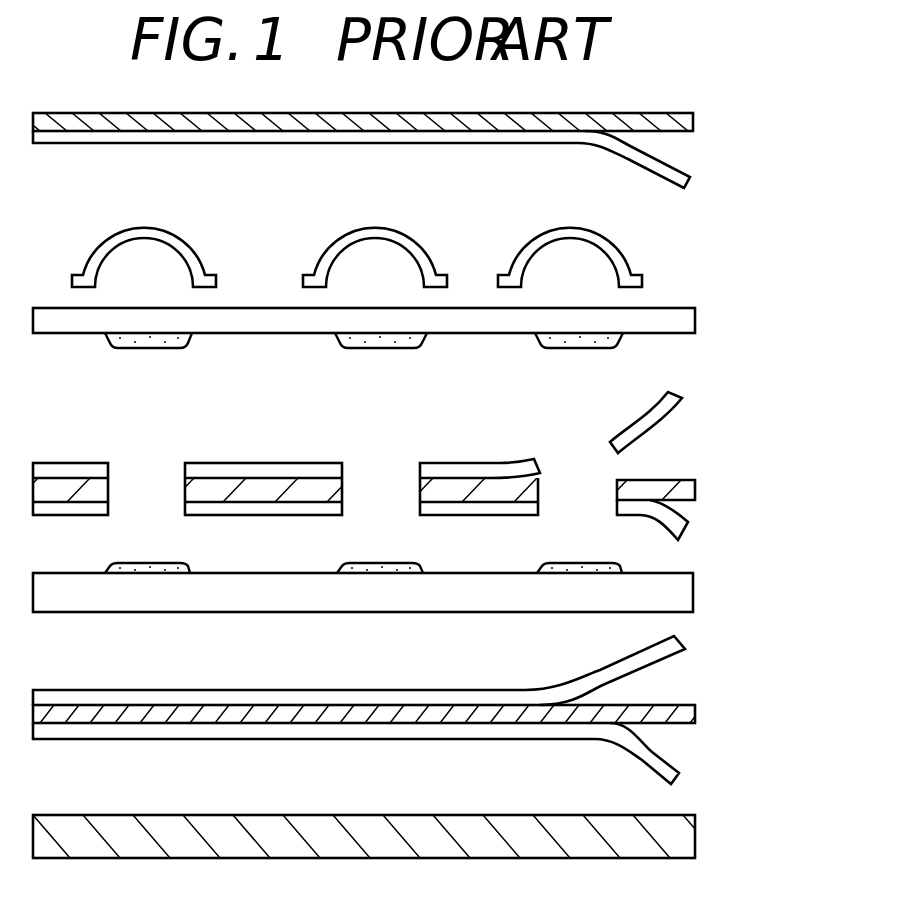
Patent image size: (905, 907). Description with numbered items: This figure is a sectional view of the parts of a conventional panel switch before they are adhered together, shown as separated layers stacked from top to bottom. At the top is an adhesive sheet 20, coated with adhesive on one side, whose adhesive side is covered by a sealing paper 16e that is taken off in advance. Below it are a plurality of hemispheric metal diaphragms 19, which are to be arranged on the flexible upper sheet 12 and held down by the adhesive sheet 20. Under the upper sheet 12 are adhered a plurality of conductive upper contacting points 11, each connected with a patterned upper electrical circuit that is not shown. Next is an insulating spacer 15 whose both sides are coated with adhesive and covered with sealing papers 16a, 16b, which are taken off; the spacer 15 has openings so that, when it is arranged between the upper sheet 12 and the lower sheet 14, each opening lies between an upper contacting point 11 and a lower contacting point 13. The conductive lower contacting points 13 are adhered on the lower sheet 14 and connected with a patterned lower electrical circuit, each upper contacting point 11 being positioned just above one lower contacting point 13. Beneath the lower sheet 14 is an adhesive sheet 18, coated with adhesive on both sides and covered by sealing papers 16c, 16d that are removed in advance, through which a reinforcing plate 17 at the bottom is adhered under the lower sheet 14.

The adhesive sheet 20 is at (691, 122).
The sealing paper 16e is at (681, 171).
The hemispheric metal diaphragms 19 is at (617, 258).
The upper sheet 12 is at (689, 322).
The upper contacting points 11 is at (565, 347).
The sealing paper 16a is at (660, 417).
The insulating spacer 15 is at (686, 492).
The sealing paper 16b is at (682, 527).
The lower contacting points 13 is at (590, 572).
The lower sheet 14 is at (689, 592).
The sealing paper 16c is at (686, 645).
The adhesive sheet 18 is at (690, 716).
The sealing paper 16d is at (684, 766).
The reinforcing plate 17 is at (688, 837).